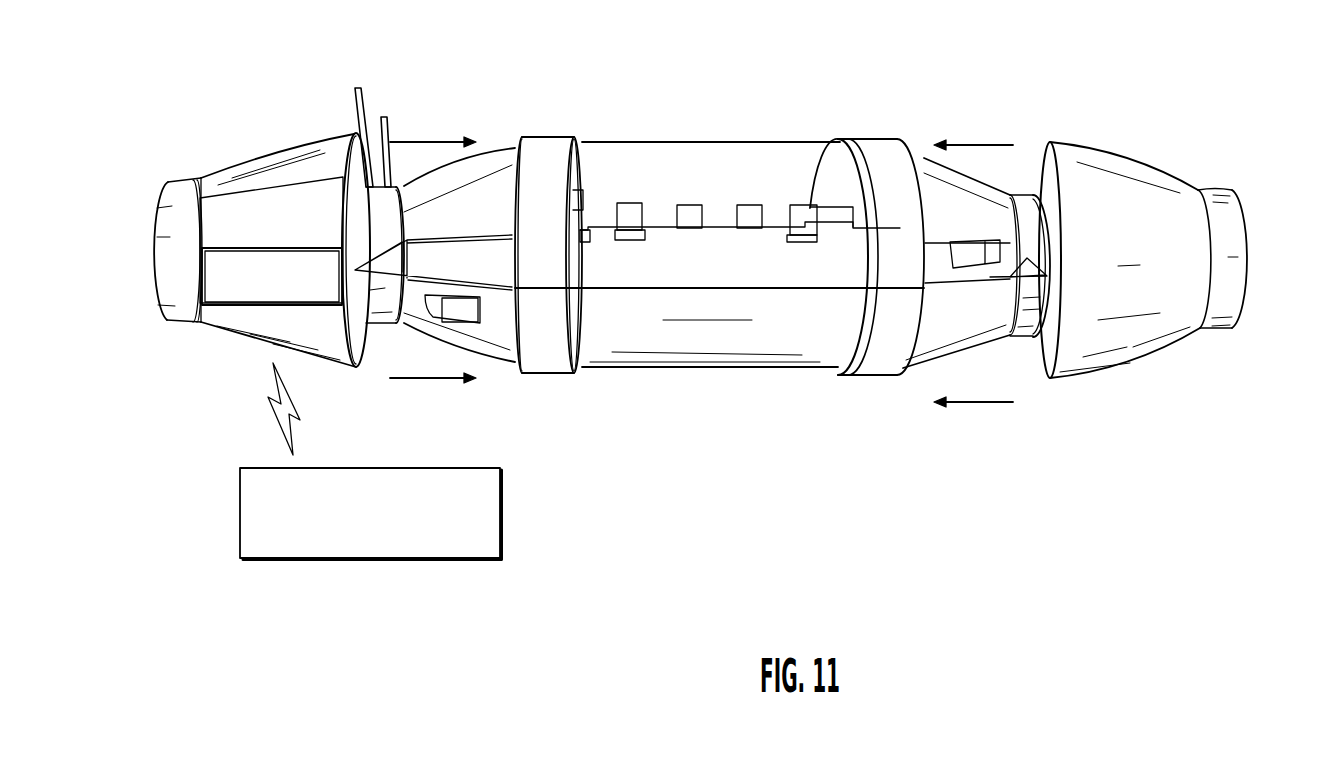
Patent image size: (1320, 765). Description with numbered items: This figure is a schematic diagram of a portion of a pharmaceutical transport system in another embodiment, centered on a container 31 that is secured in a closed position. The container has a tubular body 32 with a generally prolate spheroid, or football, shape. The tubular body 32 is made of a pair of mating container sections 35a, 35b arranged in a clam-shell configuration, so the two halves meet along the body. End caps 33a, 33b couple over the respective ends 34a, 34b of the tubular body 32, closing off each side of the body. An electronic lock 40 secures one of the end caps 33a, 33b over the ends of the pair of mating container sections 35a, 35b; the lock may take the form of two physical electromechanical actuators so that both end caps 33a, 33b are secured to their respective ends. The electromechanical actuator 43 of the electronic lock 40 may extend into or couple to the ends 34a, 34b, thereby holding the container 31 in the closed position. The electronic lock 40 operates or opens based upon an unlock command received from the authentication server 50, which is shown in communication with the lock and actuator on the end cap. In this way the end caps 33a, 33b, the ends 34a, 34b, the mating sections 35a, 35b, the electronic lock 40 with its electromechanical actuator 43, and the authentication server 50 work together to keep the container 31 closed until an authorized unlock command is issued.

The container 31 is at (808, 115).
The tubular body 32 is at (647, 143).
The end cap 33a is at (222, 167).
The end cap 33b is at (1133, 155).
The end 34a is at (363, 117).
The end 34b is at (1018, 325).
The mating container section 35a is at (394, 205).
The mating container section 35b is at (382, 327).
The electronic lock 40 is at (273, 196).
The electromechanical actuator 43 is at (258, 308).
The authentication server 50 is at (502, 512).